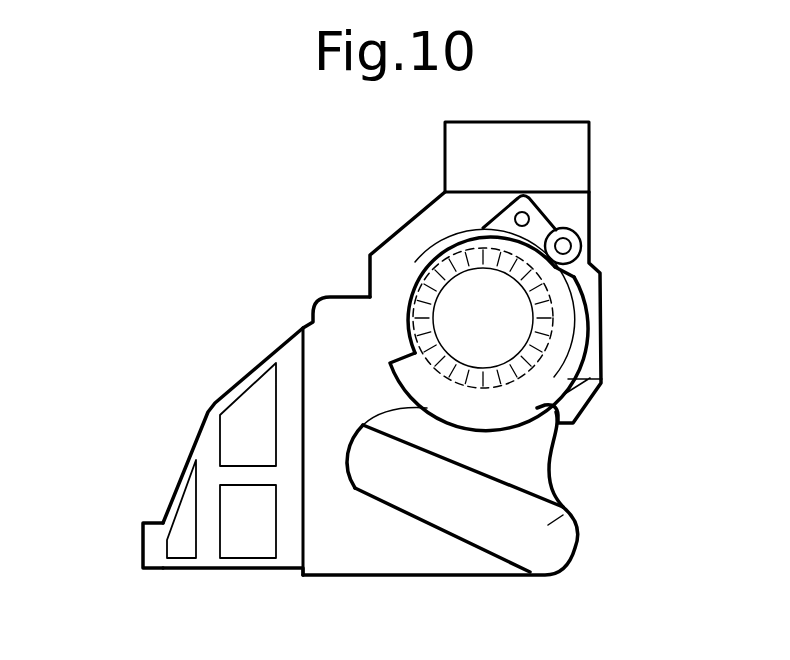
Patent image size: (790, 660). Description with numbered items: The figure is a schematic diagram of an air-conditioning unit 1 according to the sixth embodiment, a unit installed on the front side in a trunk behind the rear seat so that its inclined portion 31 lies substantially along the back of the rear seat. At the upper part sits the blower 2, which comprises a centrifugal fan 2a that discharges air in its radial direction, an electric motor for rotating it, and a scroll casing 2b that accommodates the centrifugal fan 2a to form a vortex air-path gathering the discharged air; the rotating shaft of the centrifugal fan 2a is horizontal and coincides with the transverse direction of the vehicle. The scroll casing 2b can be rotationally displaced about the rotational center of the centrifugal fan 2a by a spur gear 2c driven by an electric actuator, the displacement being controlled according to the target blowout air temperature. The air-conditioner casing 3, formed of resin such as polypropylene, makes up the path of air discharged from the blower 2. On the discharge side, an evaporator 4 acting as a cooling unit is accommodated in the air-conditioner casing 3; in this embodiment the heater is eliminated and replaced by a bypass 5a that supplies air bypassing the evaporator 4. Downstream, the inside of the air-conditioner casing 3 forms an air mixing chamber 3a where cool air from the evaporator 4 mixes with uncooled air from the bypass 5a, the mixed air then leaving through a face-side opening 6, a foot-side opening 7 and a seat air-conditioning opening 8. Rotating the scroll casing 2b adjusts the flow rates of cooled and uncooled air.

The air-conditioning unit 1 is at (600, 138).
The blower 2 is at (604, 322).
The centrifugal fan 2a is at (553, 291).
The scroll casing 2b is at (603, 378).
The spur gear 2c is at (578, 223).
The air-conditioner casing 3 is at (560, 465).
The air mixing chamber 3a is at (208, 448).
The inclined portion of the air-conditioning unit 31 is at (174, 503).
The evaporator 4 is at (548, 525).
The bypass 5a is at (343, 322).
The face-side opening 6 is at (243, 530).
The foot-side opening 7 is at (247, 413).
The seat air-conditioning opening 8 is at (178, 518).